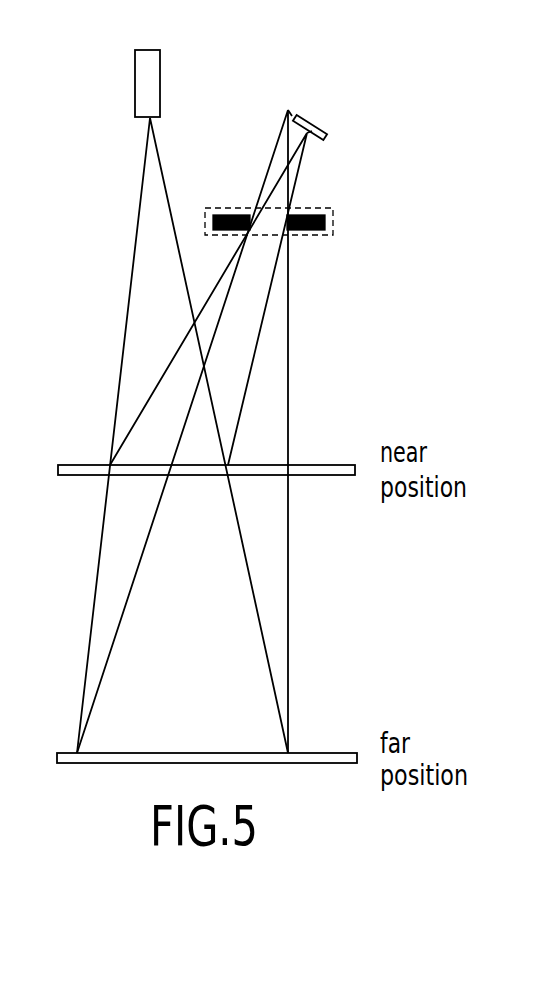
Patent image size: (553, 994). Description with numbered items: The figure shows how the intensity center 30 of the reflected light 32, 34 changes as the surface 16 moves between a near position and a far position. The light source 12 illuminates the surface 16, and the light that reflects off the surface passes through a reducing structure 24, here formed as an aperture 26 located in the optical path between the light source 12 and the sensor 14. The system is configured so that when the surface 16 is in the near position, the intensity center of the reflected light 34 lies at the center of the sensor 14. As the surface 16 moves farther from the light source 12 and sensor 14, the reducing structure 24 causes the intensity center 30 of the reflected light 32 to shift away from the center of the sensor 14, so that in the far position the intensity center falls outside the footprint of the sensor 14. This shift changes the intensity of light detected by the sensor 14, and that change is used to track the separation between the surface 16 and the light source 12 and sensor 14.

The light source 12 is at (137, 88).
The sensor 14 is at (325, 123).
The surface 16 is at (305, 465).
The reducing structure 24 is at (333, 228).
The aperture 26 is at (230, 214).
The intensity center 30 is at (288, 108).
The reflected light 32 is at (288, 318).
The reflected light 34 is at (172, 358).